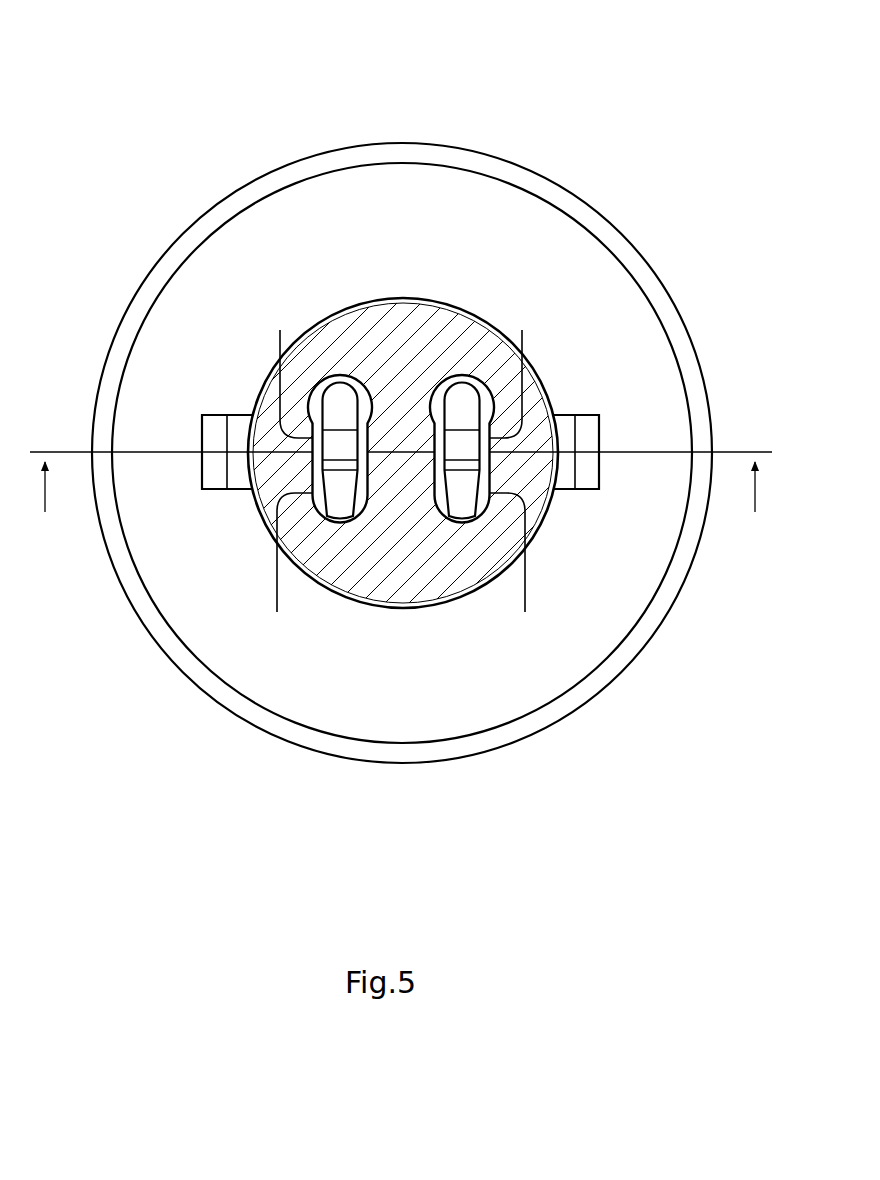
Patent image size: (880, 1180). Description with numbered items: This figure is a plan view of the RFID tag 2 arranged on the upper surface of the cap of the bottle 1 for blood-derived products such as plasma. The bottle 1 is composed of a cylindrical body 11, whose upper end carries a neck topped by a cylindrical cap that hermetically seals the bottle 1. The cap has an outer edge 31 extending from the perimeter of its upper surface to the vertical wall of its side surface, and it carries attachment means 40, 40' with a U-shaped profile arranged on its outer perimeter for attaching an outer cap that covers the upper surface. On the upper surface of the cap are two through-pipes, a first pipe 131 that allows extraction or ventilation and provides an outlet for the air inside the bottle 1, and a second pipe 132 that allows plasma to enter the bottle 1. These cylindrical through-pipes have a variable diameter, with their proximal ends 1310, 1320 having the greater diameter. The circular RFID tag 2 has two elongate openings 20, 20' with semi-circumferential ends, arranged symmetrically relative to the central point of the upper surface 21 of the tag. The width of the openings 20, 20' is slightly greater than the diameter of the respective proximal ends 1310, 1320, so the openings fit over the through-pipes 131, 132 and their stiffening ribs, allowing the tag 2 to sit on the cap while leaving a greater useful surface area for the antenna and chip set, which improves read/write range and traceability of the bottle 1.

The bottle 1 is at (166, 85).
The RFID tag 2 is at (539, 381).
The cylindrical body 11 is at (611, 684).
The opening 20 is at (308, 613).
The opening 20' is at (497, 613).
The upper surface 21 is at (403, 312).
The outer edge 31 is at (548, 511).
The attachment means 40 is at (227, 306).
The attachment means 40' is at (580, 306).
The first pipe 131 is at (280, 330).
The second pipe 132 is at (522, 330).
The proximal end 1310 is at (341, 375).
The proximal end 1320 is at (462, 375).